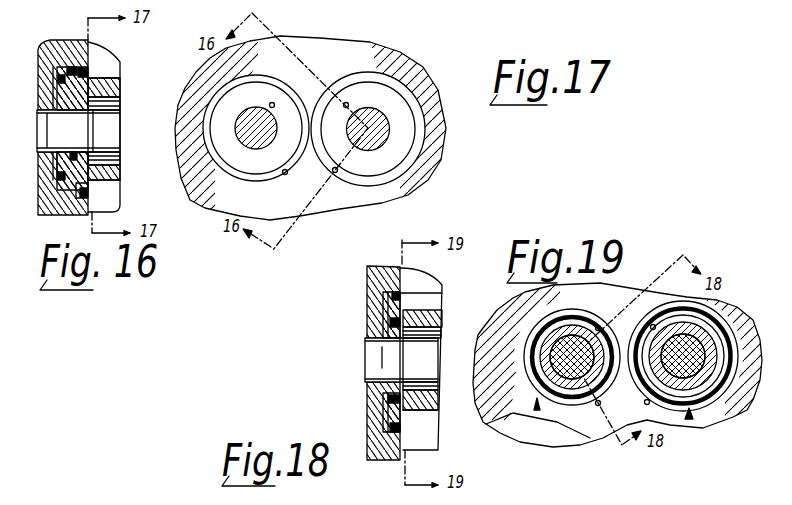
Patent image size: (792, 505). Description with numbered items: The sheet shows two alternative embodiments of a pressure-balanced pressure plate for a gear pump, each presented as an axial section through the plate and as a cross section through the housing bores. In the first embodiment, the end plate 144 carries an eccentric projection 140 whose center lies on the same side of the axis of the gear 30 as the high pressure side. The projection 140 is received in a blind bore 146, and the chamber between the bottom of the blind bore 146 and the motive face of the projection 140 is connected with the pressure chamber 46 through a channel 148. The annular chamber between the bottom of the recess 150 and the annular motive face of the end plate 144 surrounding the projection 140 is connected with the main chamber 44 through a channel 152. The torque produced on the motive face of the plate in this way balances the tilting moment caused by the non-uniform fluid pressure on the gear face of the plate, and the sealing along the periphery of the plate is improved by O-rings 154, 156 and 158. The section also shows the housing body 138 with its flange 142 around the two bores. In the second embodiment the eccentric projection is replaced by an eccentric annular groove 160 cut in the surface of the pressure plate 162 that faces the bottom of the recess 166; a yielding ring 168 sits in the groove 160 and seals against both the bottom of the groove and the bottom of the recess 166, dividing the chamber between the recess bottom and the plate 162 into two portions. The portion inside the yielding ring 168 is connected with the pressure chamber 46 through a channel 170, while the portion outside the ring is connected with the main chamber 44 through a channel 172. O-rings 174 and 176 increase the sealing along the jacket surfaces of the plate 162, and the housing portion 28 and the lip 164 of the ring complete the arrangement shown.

In FIG. 18, the housing portion 28 is at (425, 417).
In FIG. 16, the gear 30 is at (110, 190).
In FIG. 17, the main chamber 44 is at (328, 198).
In FIG. 19, the main chamber 44 is at (580, 433).
In FIG. 17, the pressure chamber 46 is at (341, 28).
In FIG. 19, the pressure chamber 46 is at (653, 296).
In FIG. 17, the housing 138 is at (240, 88).
In FIG. 17, the eccentric projection 140 is at (392, 92).
In FIG. 17, the housing flange 142 is at (226, 170).
In FIG. 16, the end plate 144 is at (115, 86).
In FIG. 17, the end plate 144 is at (413, 152).
In FIG. 16, the blind bore 146 is at (53, 73).
In FIG. 16, the channel 148 is at (102, 66).
In FIG. 17, the channel 148 is at (349, 102).
In FIG. 16, the recess 150 is at (72, 66).
In FIG. 16, the channel 152 is at (84, 190).
In FIG. 17, the channel 152 is at (377, 201).
In FIG. 16, the O-ring 154 is at (87, 198).
In FIG. 16, the O-ring 156 is at (68, 178).
In FIG. 16, the O-ring 158 is at (60, 158).
In FIG. 18, the eccentric annular groove 160 is at (388, 398).
In FIG. 19, the eccentric annular groove 160 is at (558, 415).
In FIG. 18, the pressure plate 162 is at (401, 270).
In FIG. 19, the pressure plate 162 is at (537, 407).
In FIG. 19, the seal lip 164 is at (692, 418).
In FIG. 18, the recess 166 is at (388, 297).
In FIG. 18, the yielding ring 168 is at (388, 411).
In FIG. 19, the yielding ring 168 is at (599, 406).
In FIG. 18, the channel 170 is at (405, 310).
In FIG. 19, the channel 170 is at (617, 298).
In FIG. 18, the channel 172 is at (400, 430).
In FIG. 19, the channel 172 is at (602, 410).
In FIG. 18, the O-ring 174 is at (400, 412).
In FIG. 18, the O-ring 176 is at (388, 337).